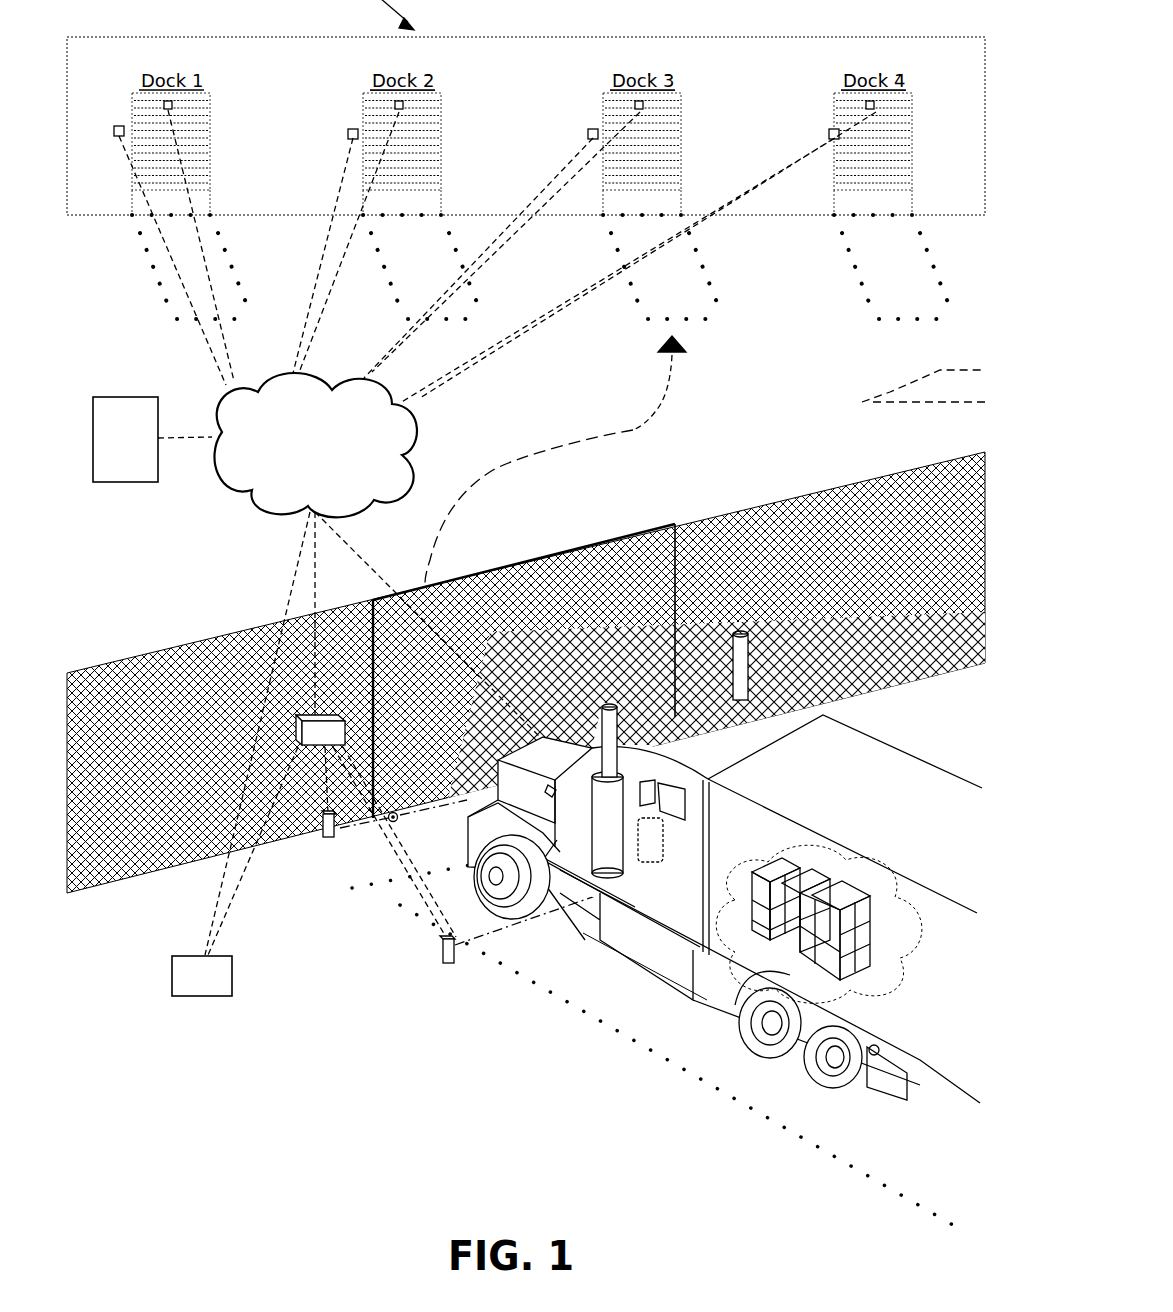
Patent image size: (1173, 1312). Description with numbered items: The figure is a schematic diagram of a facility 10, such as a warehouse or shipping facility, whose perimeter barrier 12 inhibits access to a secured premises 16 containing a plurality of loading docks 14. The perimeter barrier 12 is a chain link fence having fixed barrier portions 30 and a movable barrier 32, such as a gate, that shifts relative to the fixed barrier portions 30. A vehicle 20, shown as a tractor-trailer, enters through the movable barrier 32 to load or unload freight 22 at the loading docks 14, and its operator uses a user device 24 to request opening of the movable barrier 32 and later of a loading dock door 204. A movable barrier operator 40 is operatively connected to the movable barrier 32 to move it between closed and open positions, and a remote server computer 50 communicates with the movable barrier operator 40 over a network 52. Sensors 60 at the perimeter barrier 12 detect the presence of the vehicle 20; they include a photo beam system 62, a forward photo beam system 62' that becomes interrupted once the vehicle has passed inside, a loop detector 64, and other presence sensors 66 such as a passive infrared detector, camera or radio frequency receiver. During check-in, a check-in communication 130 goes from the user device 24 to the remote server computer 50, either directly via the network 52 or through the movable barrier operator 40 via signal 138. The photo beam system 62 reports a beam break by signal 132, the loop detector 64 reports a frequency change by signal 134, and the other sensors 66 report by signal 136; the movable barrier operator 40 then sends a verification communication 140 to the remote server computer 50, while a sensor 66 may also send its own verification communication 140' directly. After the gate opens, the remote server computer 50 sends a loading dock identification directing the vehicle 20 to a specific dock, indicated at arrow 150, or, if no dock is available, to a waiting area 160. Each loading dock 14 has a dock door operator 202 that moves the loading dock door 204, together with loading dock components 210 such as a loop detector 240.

The facility 10 is at (183, 11).
The perimeter barrier 12 is at (182, 603).
The loading docks 14 is at (302, 58).
The secured premises 16 is at (525, 407).
The vehicle 20 is at (583, 933).
The freight 22 is at (765, 972).
The user device 24 is at (640, 880).
The fixed barrier portions 30 is at (155, 652).
The movable barrier 32 is at (590, 545).
The movable barrier operator 40 is at (299, 748).
The remote server computer 50 is at (128, 483).
The network 52 is at (256, 508).
The sensors 60 is at (344, 1045).
The photo beam system 62 is at (514, 968).
The forward photo beam system 62' is at (326, 846).
The loop detector 64 is at (733, 1098).
The other presence sensors 66 is at (233, 978).
The check-in communication 130 is at (393, 590).
The signal 132 is at (407, 893).
The signal 134 is at (382, 860).
The signal 136 is at (227, 900).
The signal 138 is at (452, 777).
The verification communication 140 is at (269, 613).
The verification communication 140' is at (210, 851).
The arrow 150 is at (655, 413).
The waiting area 160 is at (866, 398).
The dock door operator 202 is at (173, 106).
The loading dock door 204 is at (197, 141).
The loading dock components 210 is at (114, 131).
The loop detector 240 is at (162, 286).